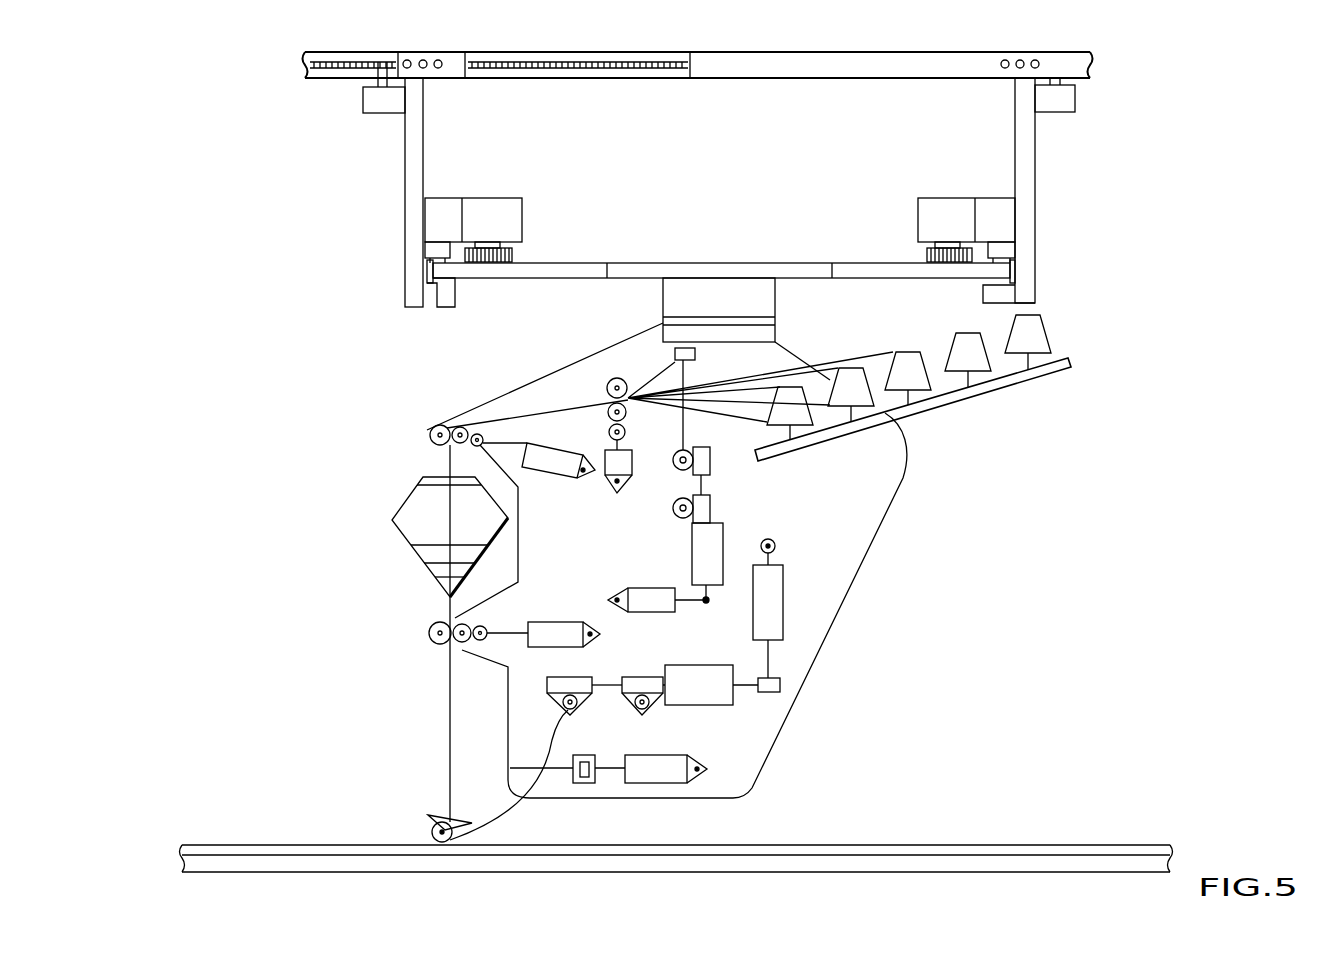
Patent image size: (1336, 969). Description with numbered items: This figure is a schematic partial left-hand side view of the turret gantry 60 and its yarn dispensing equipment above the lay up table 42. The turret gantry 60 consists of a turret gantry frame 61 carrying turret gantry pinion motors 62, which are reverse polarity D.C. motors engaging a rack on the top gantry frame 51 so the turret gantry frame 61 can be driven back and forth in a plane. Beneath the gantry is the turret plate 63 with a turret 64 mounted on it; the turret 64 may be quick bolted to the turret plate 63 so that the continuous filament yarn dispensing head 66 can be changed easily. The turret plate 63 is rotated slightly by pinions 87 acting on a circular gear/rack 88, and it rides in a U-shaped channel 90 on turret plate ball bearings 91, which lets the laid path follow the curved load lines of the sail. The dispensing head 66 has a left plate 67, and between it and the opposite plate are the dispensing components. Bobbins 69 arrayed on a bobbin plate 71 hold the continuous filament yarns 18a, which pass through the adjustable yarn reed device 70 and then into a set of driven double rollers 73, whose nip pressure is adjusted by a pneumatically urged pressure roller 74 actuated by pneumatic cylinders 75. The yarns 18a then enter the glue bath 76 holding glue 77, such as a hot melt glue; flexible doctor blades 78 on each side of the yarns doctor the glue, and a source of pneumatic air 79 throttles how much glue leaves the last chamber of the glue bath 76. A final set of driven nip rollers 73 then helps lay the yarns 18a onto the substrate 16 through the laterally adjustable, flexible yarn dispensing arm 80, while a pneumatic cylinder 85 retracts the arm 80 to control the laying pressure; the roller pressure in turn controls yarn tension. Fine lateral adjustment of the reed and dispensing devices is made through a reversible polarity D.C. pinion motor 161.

The substrate 16 is at (848, 845).
The continuous filament yarns 18a is at (880, 365).
The lay up table 42 is at (520, 876).
The top gantry frame 51 is at (700, 78).
The turret gantry 60 is at (1080, 158).
The turret gantry frame 61 is at (405, 190).
The turret gantry pinion motors 62 is at (363, 108).
The turret plate 63 is at (605, 268).
The turret 64 is at (776, 308).
The continuous filament yarn dispensing head 66 is at (475, 198).
The left plate 67 is at (833, 625).
The bobbins 69 is at (1048, 335).
The adjustable yarn reed device 70 is at (683, 433).
The bobbin plate 71 is at (1070, 362).
The driven double rollers 73 is at (605, 380).
The pressure roller 74 is at (606, 432).
The pneumatic cylinders 75 is at (590, 478).
The glue bath 76 is at (392, 520).
The glue 77 is at (440, 528).
The flexible doctor blades 78 is at (428, 563).
The source of pneumatic air 79 is at (448, 597).
The yarn dispensing arms 80 is at (505, 818).
The pneumatic cylinder 85 is at (630, 755).
The pinions 87 is at (515, 260).
The circular gear/rack 88 is at (477, 265).
The U-shaped channel 90 is at (405, 292).
The turret plate ball bearings 91 is at (457, 307).
The pinion motor 161 is at (692, 557).